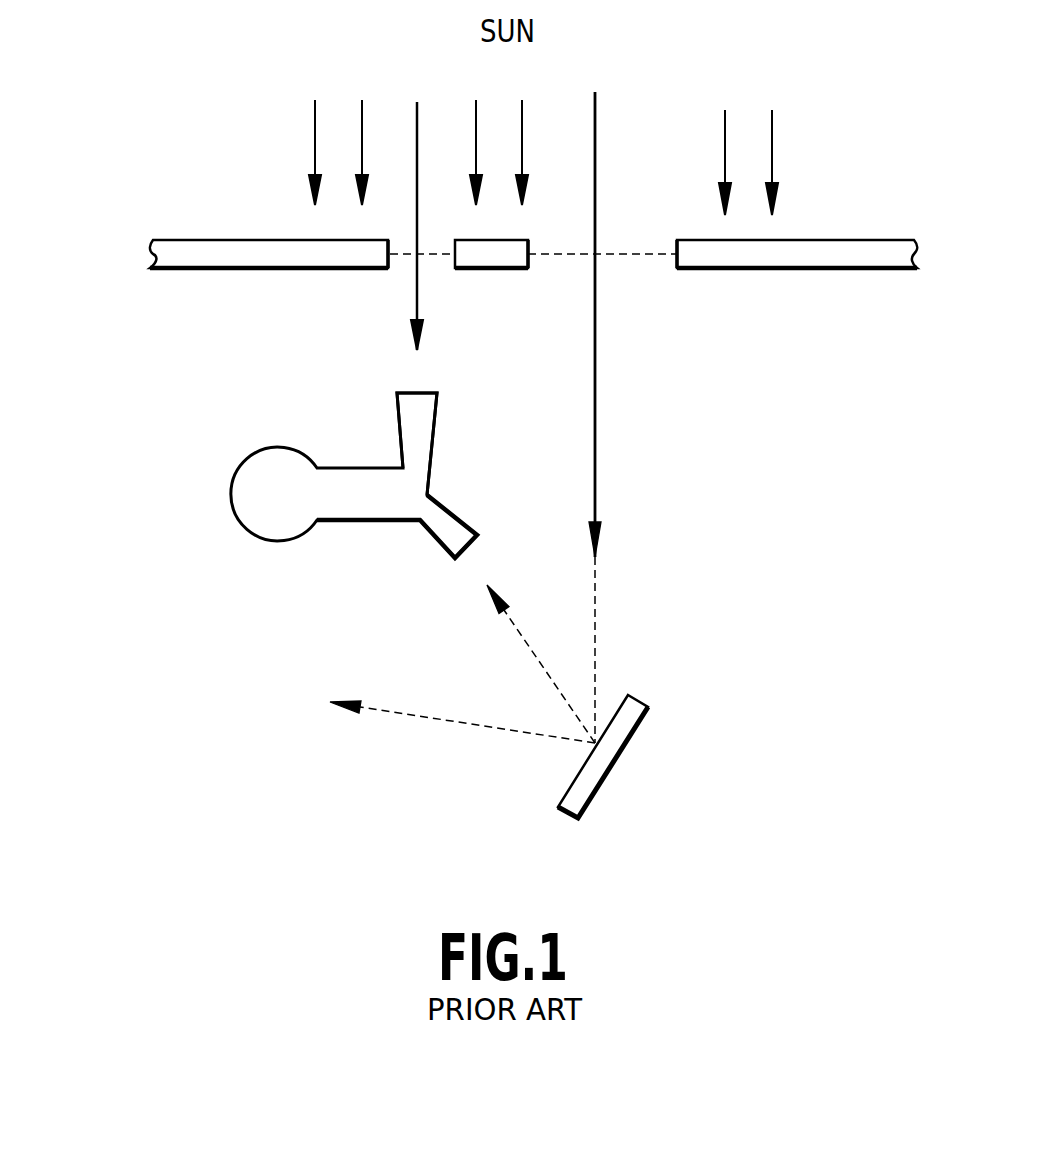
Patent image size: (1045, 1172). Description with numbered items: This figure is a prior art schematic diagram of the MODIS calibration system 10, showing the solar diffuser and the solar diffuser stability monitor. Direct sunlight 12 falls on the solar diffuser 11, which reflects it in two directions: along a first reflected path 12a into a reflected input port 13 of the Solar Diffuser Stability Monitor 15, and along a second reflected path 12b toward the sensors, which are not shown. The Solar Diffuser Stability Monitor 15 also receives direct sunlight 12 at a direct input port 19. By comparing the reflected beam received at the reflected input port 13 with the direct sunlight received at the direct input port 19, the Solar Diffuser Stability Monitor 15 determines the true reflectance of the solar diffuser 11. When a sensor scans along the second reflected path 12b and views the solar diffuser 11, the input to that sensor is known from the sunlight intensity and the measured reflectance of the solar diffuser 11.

The MODIS calibration system 10 is at (147, 178).
The solar diffuser 11 is at (607, 777).
The direct sunlight 12 is at (596, 400).
The first reflected path 12a is at (497, 595).
The second reflected path 12b is at (410, 717).
The reflected input port 13 is at (445, 532).
The Solar Diffuser Stability Monitor 15 is at (218, 553).
The direct input port 19 is at (418, 432).